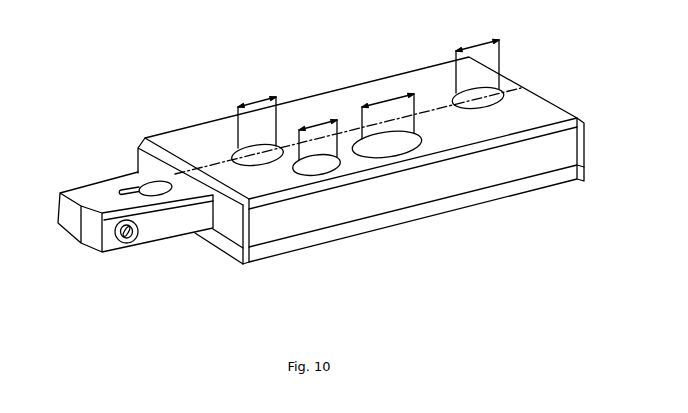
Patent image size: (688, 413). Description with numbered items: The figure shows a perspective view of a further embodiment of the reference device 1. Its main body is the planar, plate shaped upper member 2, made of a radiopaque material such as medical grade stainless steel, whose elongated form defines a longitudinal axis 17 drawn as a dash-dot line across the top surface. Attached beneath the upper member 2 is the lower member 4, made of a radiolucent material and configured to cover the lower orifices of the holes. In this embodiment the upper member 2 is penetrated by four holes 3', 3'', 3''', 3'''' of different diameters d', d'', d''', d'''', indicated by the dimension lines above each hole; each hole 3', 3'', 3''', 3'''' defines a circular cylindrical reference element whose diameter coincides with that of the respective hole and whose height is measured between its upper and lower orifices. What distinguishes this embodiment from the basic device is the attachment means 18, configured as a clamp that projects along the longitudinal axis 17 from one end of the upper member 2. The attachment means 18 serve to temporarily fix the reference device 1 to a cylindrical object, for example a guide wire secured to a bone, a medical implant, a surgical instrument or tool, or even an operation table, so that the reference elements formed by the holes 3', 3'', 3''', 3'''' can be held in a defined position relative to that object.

The reference device 1 is at (387, 18).
The upper member 2 is at (366, 209).
The hole 3' is at (257, 136).
The hole 3'' is at (309, 147).
The hole 3''' is at (408, 123).
The hole 3'''' is at (492, 76).
The lower member 4 is at (462, 203).
The longitudinal axis 17 is at (526, 88).
The attachment means 18 is at (150, 244).